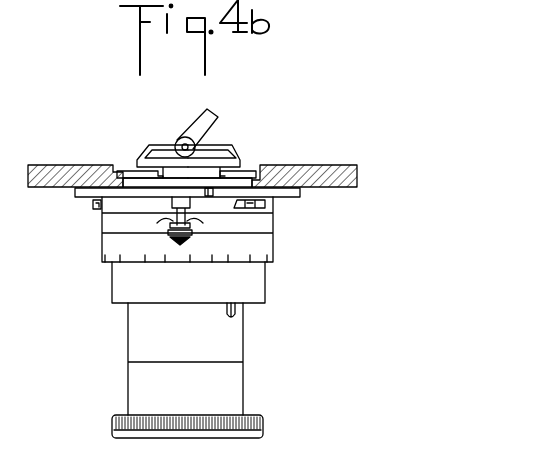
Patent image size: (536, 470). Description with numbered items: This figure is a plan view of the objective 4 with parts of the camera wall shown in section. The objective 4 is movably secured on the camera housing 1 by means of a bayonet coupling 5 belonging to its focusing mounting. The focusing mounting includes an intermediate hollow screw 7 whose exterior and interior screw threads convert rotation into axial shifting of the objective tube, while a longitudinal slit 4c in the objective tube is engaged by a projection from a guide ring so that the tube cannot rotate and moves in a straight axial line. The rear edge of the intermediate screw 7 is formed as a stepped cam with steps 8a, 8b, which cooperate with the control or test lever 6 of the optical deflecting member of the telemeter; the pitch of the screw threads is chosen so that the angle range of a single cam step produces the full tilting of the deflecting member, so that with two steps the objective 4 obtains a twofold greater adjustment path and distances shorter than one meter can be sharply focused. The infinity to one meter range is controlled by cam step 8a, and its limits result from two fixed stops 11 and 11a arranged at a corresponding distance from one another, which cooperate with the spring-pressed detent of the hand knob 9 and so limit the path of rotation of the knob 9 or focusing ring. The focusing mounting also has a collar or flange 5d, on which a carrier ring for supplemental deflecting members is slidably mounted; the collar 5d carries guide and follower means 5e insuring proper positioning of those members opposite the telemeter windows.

The camera housing 1 is at (51, 165).
The objective 4 is at (137, 381).
The longitudinal slit 4c is at (238, 311).
The bayonet coupling 5 is at (130, 170).
The collar or flange 5d is at (300, 192).
The guide and follower means 5e is at (258, 176).
The control lever 6 is at (207, 128).
The intermediate hollow screw 7 is at (213, 190).
The cam step 8a is at (163, 147).
The cam step 8b is at (228, 148).
The hand knob 9 is at (180, 245).
The fixed stop 11 is at (258, 208).
The fixed stop 11a is at (97, 208).